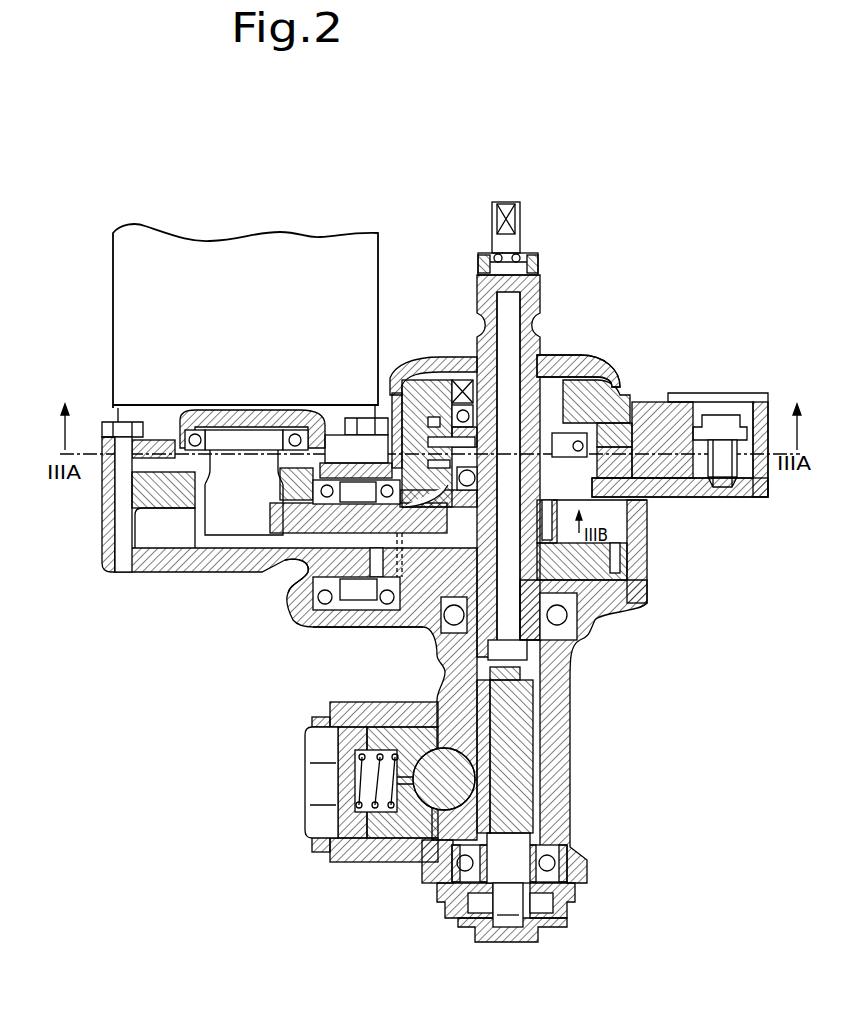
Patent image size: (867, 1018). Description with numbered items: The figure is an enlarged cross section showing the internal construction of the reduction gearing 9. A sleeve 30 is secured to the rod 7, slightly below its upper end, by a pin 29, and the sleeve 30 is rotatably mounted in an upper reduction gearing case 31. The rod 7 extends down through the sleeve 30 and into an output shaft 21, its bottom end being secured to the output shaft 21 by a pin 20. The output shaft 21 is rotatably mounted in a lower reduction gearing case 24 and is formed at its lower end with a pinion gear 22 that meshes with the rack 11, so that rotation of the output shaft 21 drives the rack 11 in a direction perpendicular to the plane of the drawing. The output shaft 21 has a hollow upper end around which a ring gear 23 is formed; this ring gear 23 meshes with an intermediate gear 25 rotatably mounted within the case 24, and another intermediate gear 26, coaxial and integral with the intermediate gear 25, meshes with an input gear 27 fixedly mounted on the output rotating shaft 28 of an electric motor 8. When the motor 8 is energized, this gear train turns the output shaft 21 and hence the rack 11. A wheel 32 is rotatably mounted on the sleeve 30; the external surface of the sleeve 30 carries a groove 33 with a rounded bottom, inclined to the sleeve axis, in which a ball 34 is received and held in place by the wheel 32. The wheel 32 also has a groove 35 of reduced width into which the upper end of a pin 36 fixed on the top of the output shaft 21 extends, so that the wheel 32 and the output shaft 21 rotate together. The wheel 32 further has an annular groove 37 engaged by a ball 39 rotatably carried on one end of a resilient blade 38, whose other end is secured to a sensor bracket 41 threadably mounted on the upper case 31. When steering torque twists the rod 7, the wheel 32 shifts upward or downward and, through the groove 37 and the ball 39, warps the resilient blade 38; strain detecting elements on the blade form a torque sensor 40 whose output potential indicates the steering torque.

The rod 7 is at (525, 217).
The electric motor 8 is at (112, 276).
The reduction gearing 9 is at (94, 562).
The rack 11 is at (438, 802).
The pin 20 is at (545, 690).
The output shaft 21 is at (545, 672).
The pinion gear 22 is at (540, 795).
The ring gear 23 is at (622, 563).
The lower reduction gearing case 24 is at (318, 628).
The intermediate gear 25 is at (280, 585).
The intermediate gear 26 is at (287, 537).
The input gear 27 is at (172, 538).
The output rotating shaft 28 is at (235, 418).
The pin 29 is at (540, 258).
The sleeve 30 is at (545, 297).
The upper reduction gearing case 31 is at (622, 400).
The wheel 32 is at (435, 440).
The groove 33 is at (353, 562).
The ball 34 is at (433, 440).
The groove 35 is at (590, 507).
The pin 36 is at (605, 522).
The annular groove 37 is at (385, 395).
The resilient blade 38 is at (645, 445).
The ball 39 is at (605, 445).
The torque sensor 40 is at (690, 398).
The sensor bracket 41 is at (753, 498).